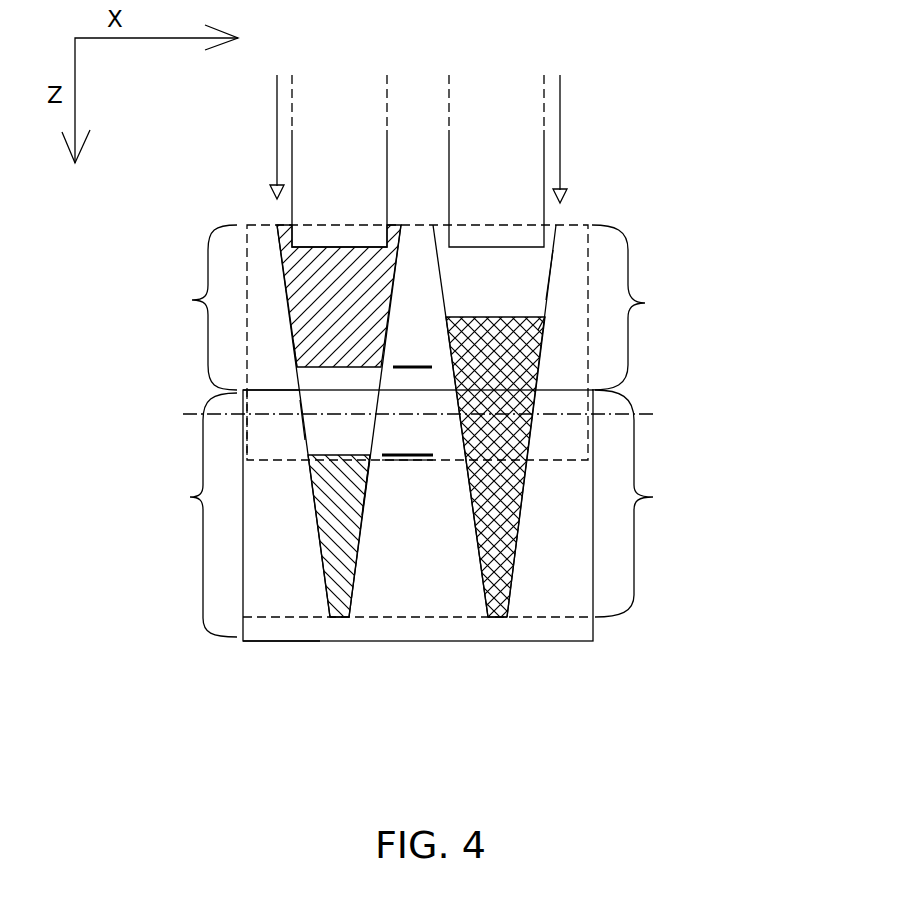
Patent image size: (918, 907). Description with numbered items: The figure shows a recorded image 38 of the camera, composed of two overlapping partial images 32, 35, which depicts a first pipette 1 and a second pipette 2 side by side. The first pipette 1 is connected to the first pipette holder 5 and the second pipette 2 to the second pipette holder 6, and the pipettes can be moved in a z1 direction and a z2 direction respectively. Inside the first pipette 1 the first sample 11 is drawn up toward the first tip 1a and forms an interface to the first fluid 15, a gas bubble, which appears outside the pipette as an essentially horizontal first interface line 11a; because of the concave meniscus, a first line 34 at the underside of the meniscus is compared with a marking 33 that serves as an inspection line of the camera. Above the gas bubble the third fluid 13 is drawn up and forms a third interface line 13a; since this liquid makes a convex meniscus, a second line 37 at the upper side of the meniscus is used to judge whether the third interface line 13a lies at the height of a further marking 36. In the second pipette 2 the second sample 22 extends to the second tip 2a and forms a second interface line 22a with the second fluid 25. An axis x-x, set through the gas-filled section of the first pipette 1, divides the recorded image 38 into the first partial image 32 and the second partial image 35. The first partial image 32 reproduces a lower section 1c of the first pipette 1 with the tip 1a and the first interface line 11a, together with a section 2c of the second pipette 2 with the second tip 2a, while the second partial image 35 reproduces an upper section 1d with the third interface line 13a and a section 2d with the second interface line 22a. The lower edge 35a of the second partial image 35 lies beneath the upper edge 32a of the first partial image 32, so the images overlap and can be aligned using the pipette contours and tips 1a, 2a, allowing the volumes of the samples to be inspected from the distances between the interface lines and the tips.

The first pipette 1 is at (285, 471).
The first tip 1a is at (337, 623).
The first section of the first pipette 1c is at (190, 497).
The third section of the first pipette 1d is at (192, 300).
The second pipette 2 is at (561, 471).
The second tip 2a is at (497, 625).
The section of the second pipette 2c is at (653, 497).
The section of the second pipette 2d is at (645, 303).
The first pipette holder 5 is at (347, 172).
The second pipette holder 6 is at (528, 175).
The first sample 11 is at (352, 582).
The first interface line 11a is at (363, 485).
The third fluid 13 is at (287, 313).
The third interface line 13a is at (297, 353).
The first fluid 15 is at (340, 435).
The second sample 22 is at (517, 527).
The second interface line 22a is at (560, 337).
The second fluid 25 is at (487, 277).
The first partial image 32 is at (568, 630).
The upper edge of the first partial image 32a is at (243, 391).
The marking 33 is at (400, 457).
The first line 34 is at (395, 458).
The second partial image 35 is at (260, 250).
The lower edge of the second partial image 35a is at (272, 463).
The further marking 36 is at (412, 365).
The second line 37 is at (407, 440).
The recorded image 38 is at (220, 645).
The z1 direction z1 is at (263, 137).
The z2 direction z2 is at (575, 139).
The axis x-x is at (190, 415).